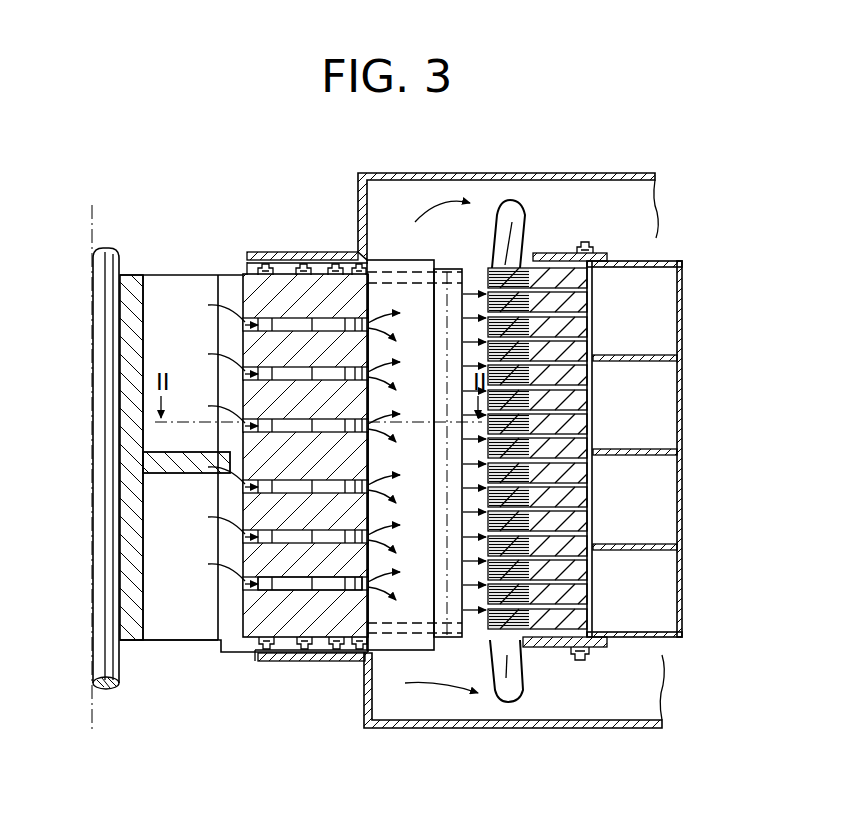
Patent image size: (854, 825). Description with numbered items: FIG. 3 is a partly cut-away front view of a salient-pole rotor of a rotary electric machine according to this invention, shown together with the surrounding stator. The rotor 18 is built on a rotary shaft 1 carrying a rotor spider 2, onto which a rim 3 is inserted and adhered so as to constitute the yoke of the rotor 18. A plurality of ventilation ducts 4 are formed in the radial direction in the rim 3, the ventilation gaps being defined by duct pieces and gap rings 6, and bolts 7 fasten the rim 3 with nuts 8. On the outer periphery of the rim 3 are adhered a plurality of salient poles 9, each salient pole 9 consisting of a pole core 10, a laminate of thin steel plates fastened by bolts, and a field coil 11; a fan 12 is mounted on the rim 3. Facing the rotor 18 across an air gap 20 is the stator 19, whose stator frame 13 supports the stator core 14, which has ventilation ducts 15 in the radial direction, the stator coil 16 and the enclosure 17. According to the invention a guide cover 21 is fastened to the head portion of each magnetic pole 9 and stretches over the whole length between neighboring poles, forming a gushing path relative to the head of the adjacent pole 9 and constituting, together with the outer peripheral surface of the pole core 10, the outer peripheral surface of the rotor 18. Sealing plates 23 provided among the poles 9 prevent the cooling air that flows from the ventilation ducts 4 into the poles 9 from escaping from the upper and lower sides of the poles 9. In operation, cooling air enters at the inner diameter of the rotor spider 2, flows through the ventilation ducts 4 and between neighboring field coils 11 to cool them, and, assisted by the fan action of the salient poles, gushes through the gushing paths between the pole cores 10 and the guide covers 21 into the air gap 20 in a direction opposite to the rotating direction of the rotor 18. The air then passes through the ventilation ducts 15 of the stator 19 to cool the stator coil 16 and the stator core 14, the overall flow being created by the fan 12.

The rotary shaft 1 is at (119, 262).
The rotor spider 2 is at (199, 274).
The rim 3 is at (283, 263).
The ventilation ducts 4 is at (283, 322).
The gap rings 6 is at (285, 590).
The bolts 7 is at (256, 654).
The nuts 8 is at (270, 661).
The salient pole 9 is at (447, 640).
The pole core 10 is at (450, 269).
The field coil 11 is at (406, 260).
The fan 12 is at (318, 252).
The stator frame 13 is at (660, 252).
The stator core 14 is at (567, 253).
The ventilation ducts 15 is at (590, 346).
The stator coil 16 is at (527, 217).
The enclosure 17 is at (598, 173).
The rotor 18 is at (178, 641).
The stator 19 is at (745, 407).
The air gap 20 is at (478, 291).
The guide cover 21 is at (445, 352).
The sealing plates 23 is at (409, 285).